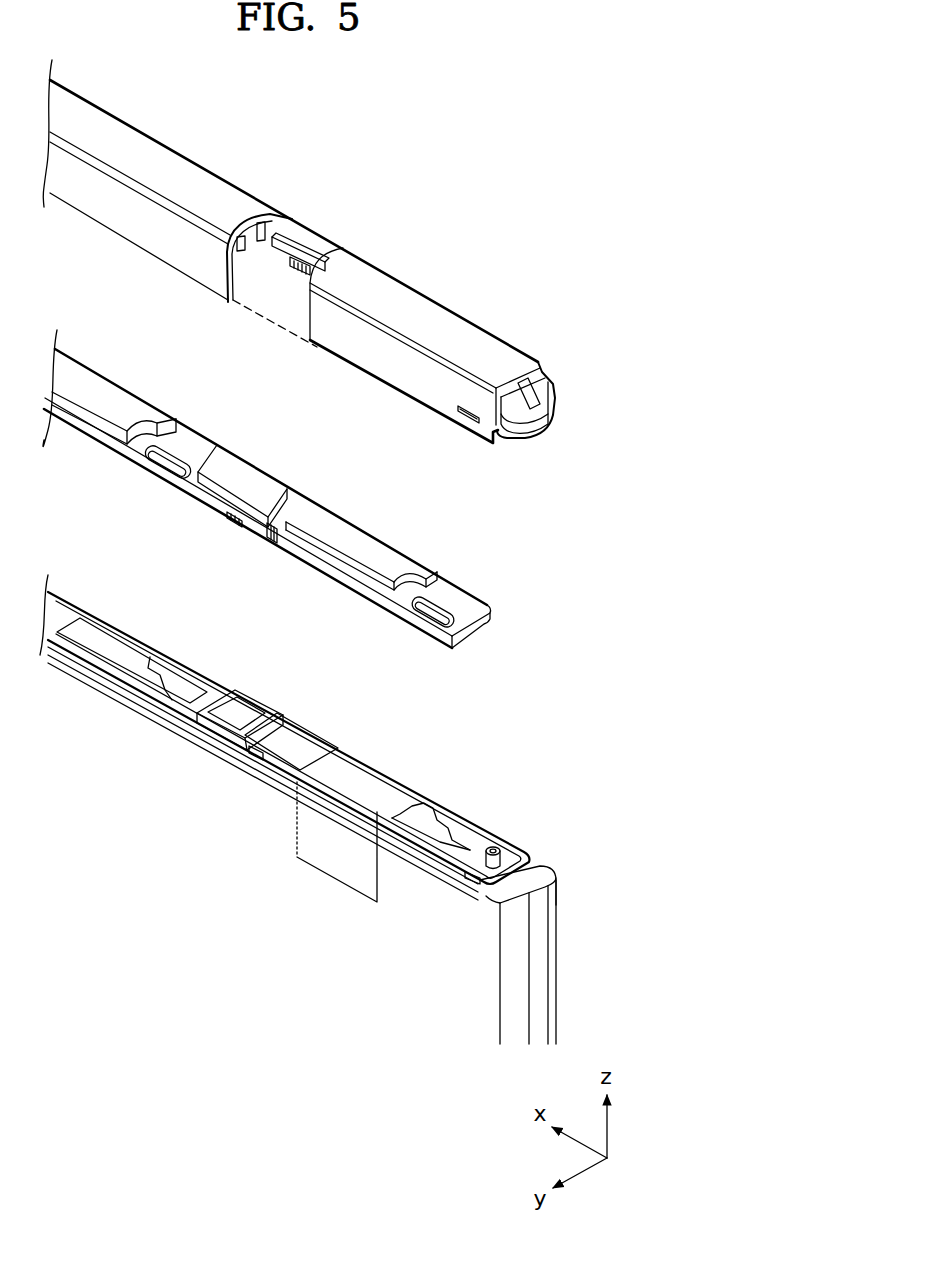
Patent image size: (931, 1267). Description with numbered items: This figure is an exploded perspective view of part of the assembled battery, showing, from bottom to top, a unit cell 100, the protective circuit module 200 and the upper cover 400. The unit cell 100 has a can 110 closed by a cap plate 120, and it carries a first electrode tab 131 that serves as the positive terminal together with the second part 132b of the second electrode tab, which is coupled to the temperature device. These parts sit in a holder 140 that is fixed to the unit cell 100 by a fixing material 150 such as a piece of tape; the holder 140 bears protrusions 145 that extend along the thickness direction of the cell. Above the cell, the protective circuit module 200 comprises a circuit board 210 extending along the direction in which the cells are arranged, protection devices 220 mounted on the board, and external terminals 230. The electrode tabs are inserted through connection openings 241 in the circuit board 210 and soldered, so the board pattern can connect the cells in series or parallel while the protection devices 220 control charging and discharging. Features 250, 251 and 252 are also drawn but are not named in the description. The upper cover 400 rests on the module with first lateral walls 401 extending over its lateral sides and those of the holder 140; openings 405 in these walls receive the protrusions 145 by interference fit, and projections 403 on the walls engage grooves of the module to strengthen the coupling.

The unit cell 100 is at (576, 940).
The can 110 is at (488, 965).
The cap plate 120 is at (534, 870).
The first electrode tab 131 is at (108, 655).
The second part 132b is at (436, 814).
The holder 140 is at (493, 847).
The protrusions 145 is at (252, 757).
The fixing material 150 is at (343, 875).
The protective circuit module 200 is at (313, 495).
The circuit board 210 is at (478, 633).
The protection devices 220 is at (92, 385).
The external terminals 230 is at (306, 486).
The connection openings 241 is at (168, 460).
The tab assembly 250 is at (241, 578).
The first tab 251 is at (255, 524).
The second tab 252 is at (273, 532).
The upper cover 400 is at (373, 252).
The first lateral walls 401 is at (404, 385).
The projections 403 is at (305, 258).
The openings 405 is at (463, 405).